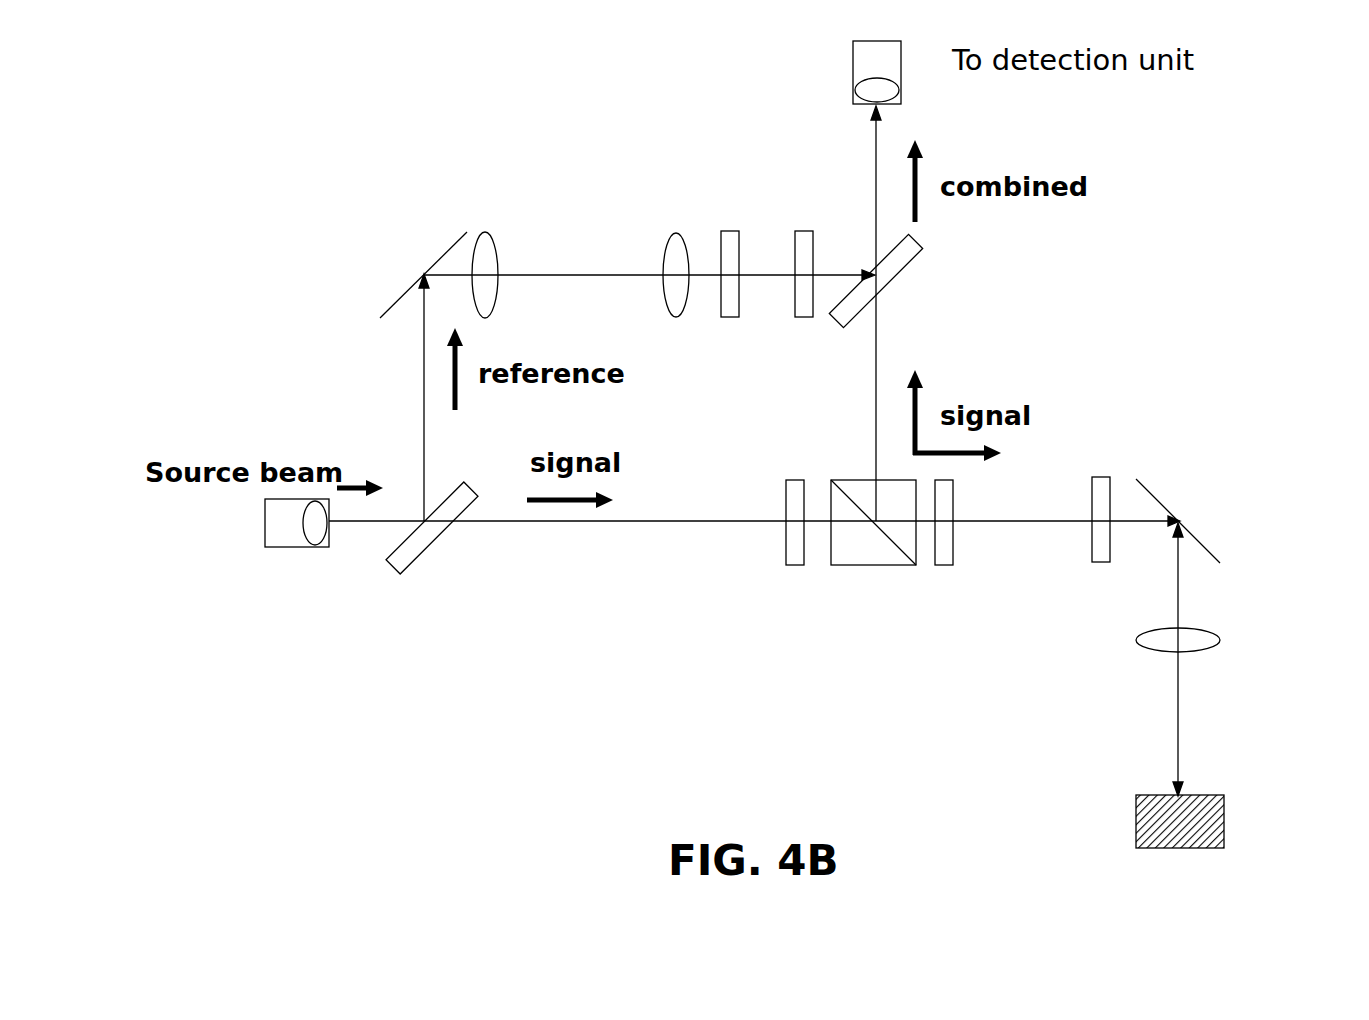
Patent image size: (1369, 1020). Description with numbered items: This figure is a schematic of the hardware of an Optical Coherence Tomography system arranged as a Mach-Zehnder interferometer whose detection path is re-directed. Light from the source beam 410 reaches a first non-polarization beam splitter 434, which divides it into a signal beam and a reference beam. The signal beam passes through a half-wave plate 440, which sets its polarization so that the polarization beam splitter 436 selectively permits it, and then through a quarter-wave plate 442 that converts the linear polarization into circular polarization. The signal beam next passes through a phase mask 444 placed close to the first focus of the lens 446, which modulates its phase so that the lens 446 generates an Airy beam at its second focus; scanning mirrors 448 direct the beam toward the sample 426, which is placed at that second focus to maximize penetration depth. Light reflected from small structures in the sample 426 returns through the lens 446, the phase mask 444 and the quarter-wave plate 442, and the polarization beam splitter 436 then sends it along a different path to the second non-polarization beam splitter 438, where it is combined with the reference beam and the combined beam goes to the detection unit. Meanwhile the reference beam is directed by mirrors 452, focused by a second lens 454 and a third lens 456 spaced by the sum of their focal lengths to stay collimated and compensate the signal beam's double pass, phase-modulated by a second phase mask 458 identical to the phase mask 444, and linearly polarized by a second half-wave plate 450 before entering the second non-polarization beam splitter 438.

The source beam 410 is at (293, 548).
The non-polarization beam splitter 434 is at (452, 546).
The mirrors 452 is at (413, 290).
The second lens 454 is at (495, 240).
The third lens 456 is at (662, 240).
The second phase mask 458 is at (735, 240).
The second half-wave plate 450 is at (806, 240).
The second non-polarization beam splitter 438 is at (900, 290).
The half-wave plate 440 is at (792, 567).
The polarization beam splitter 436 is at (870, 567).
The quarter-wave plate 442 is at (946, 567).
The phase mask 444 is at (1100, 565).
The scanning mirrors 448 is at (1189, 532).
The lens 446 is at (1214, 630).
The sample 426 is at (1183, 851).